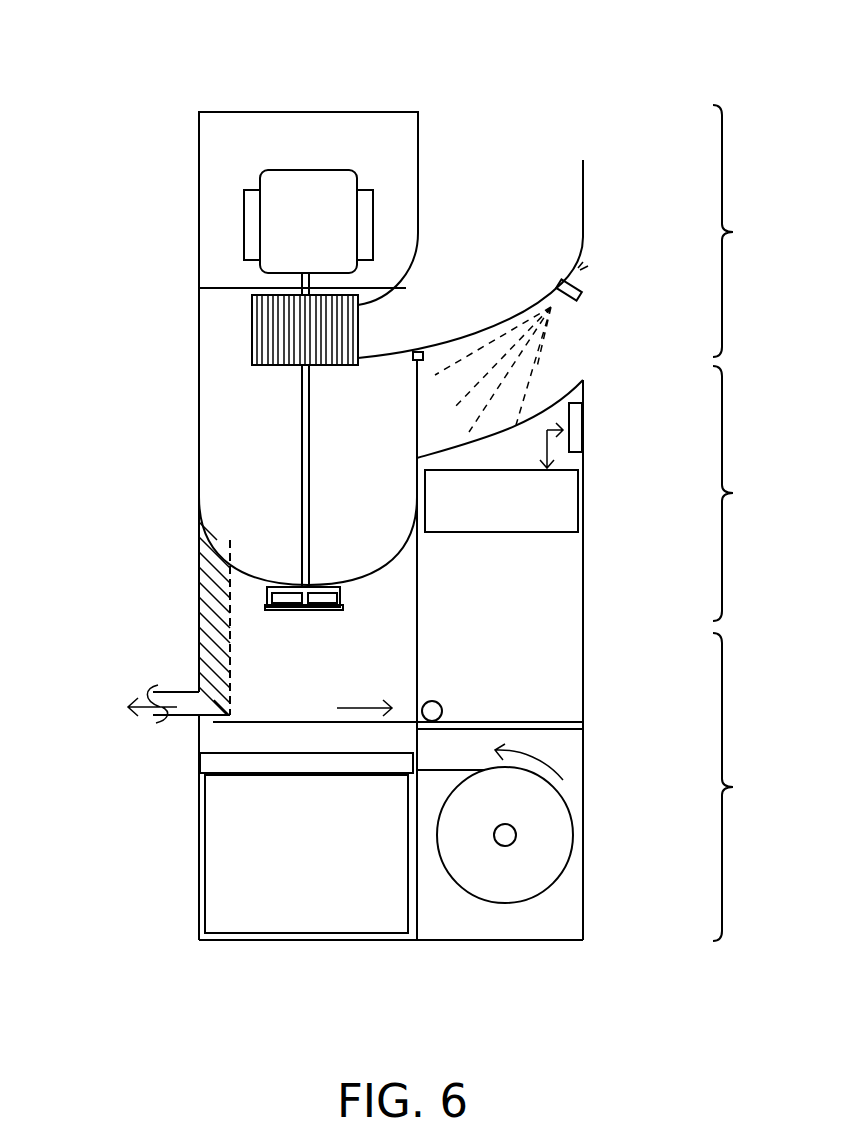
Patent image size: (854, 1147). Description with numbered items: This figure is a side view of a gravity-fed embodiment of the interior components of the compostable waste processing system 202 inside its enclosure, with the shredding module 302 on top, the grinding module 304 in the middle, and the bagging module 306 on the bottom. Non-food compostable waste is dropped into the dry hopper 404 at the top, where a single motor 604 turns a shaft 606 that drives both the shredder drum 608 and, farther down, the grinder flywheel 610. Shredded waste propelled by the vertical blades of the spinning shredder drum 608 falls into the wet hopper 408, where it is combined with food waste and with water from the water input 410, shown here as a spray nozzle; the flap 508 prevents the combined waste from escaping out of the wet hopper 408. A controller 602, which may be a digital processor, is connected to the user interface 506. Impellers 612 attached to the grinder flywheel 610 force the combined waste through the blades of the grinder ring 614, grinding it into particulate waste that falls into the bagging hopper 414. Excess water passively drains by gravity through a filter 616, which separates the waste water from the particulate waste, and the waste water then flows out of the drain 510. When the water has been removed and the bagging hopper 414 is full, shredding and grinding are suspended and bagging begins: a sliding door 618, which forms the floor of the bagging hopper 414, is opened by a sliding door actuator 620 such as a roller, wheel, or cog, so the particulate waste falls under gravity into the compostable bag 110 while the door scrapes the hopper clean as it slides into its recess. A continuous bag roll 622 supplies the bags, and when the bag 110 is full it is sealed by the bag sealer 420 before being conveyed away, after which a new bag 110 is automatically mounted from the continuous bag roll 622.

The compostable waste processing system 202 is at (136, 89).
The shredding module 302 is at (761, 231).
The grinding module 304 is at (760, 493).
The bagging module 306 is at (760, 787).
The dry hopper 404 is at (520, 249).
The motor 604 is at (325, 236).
The shredder drum 608 is at (252, 333).
The shaft 606 is at (305, 417).
The flap 508 is at (417, 393).
The water input 410 is at (569, 302).
The user interface 506 is at (585, 422).
The controller 602 is at (517, 508).
The wet hopper 408 is at (391, 511).
The filter 616 is at (212, 637).
The impellers 612 is at (305, 611).
The grinder ring 614 is at (350, 608).
The grinder flywheel 610 is at (327, 611).
The bagging hopper 414 is at (333, 700).
The sliding door actuator 620 is at (441, 702).
The drain 510 is at (137, 723).
The sliding door 618 is at (247, 722).
The bag sealer 420 is at (203, 766).
The compostable bag 110 is at (327, 855).
The continuous bag roll 622 is at (562, 870).